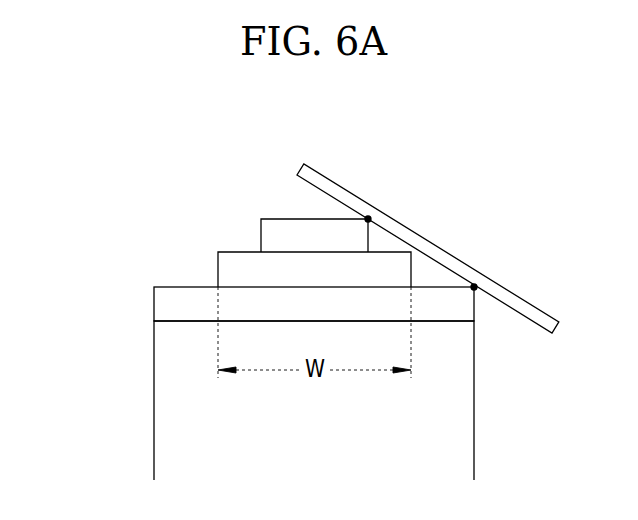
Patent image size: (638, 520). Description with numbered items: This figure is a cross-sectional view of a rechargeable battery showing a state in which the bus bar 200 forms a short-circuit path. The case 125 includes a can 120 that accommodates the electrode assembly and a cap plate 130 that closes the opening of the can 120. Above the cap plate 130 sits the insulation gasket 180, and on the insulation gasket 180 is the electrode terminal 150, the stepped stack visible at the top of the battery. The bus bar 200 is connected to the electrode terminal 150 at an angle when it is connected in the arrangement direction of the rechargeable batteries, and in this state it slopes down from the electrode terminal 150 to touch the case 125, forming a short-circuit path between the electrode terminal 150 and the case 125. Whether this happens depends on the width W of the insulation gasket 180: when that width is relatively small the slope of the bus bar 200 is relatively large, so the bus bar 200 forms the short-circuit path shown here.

The can 120 is at (157, 395).
The case 125 is at (72, 303).
The cap plate 130 is at (157, 302).
The electrode terminal 150 is at (264, 234).
The insulation gasket 180 is at (221, 267).
The bus bar 200 is at (450, 256).